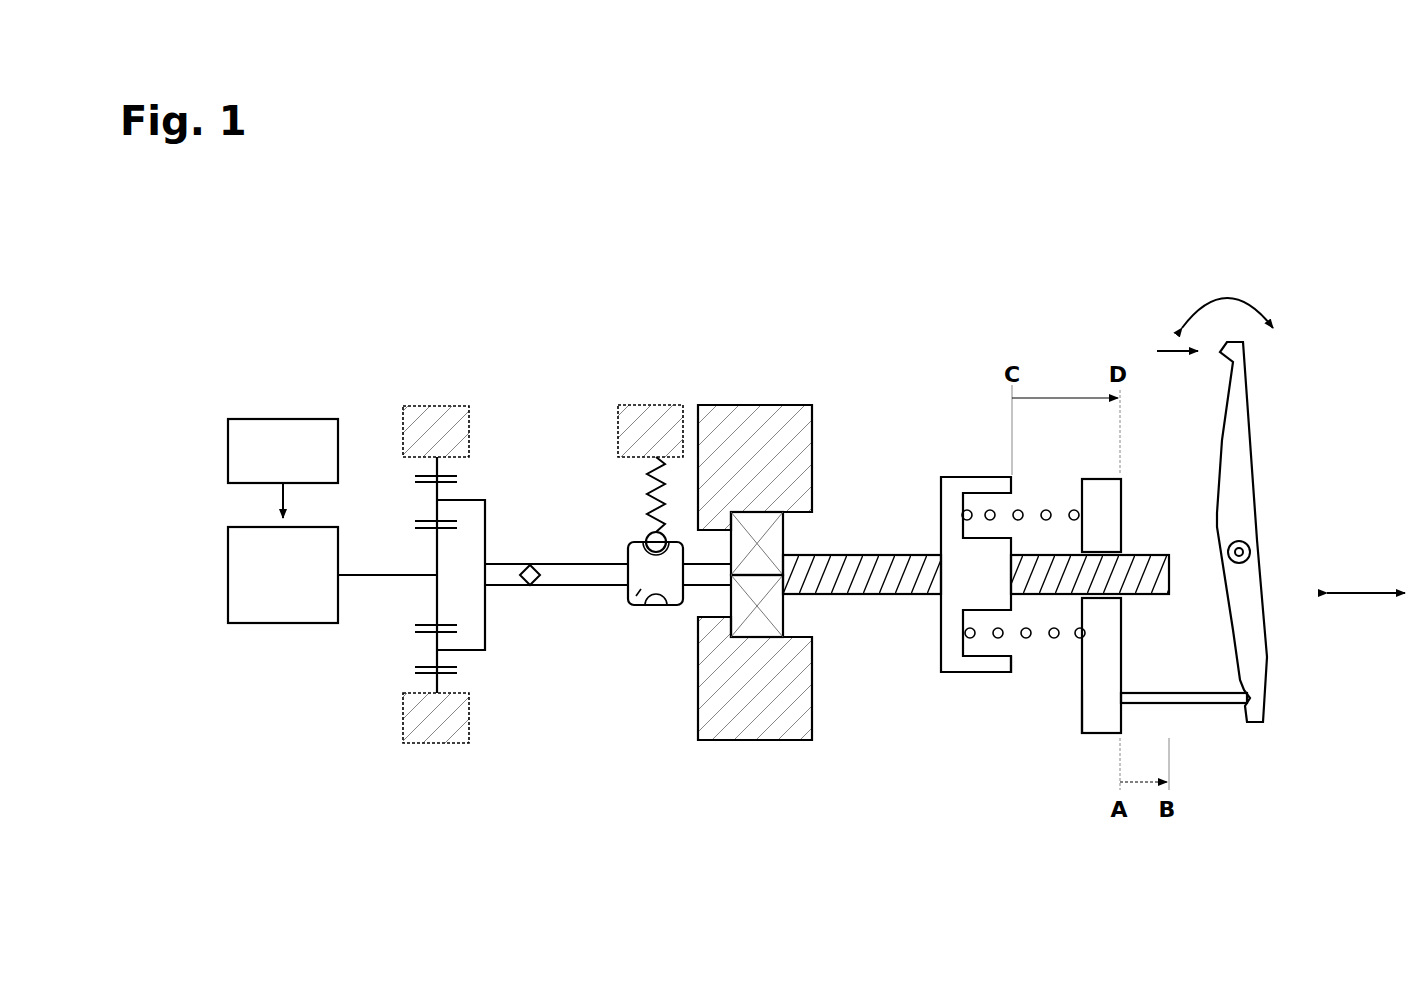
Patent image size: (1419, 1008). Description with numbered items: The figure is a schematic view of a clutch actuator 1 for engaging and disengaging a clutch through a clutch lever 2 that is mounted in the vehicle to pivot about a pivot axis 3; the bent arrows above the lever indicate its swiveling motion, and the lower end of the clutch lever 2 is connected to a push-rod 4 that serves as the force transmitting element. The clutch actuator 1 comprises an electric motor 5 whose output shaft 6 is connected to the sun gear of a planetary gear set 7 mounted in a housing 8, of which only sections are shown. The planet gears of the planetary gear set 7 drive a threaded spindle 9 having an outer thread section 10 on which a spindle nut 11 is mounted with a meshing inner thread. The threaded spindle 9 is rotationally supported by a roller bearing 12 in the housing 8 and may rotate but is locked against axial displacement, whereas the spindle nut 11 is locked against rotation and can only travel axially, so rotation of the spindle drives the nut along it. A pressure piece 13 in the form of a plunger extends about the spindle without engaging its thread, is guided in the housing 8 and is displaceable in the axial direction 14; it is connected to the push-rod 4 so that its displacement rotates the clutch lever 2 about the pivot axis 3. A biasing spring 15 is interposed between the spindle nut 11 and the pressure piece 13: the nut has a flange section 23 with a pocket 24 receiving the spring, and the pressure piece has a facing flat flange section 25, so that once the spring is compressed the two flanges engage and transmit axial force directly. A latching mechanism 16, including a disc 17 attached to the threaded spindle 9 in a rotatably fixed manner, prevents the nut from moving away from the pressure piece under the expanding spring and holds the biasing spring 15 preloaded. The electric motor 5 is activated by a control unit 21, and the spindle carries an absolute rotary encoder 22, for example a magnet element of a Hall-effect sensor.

The clutch actuator 1 is at (818, 337).
The clutch lever 2 is at (1238, 452).
The pivot axis 3 is at (1250, 548).
The push-rod 4 is at (1209, 700).
The electric motor 5 is at (278, 600).
The output shaft 6 is at (366, 565).
The planetary gear set 7 is at (462, 492).
The housing 8 is at (439, 432).
The threaded spindle 9 is at (880, 578).
The outer thread section 10 is at (868, 574).
The spindle nut 11 is at (955, 645).
The roller bearing 12 is at (771, 611).
The pressure piece 13 is at (1093, 706).
The axial direction 14 is at (1372, 590).
The biasing spring 15 is at (1000, 640).
The latching mechanism 16 is at (660, 645).
The disc 17 is at (637, 600).
The control unit 21 is at (277, 437).
The absolute rotary encoder 22 is at (530, 590).
The flange section 23 is at (1022, 676).
The pocket 24 is at (975, 505).
The flange section 25 is at (1073, 713).